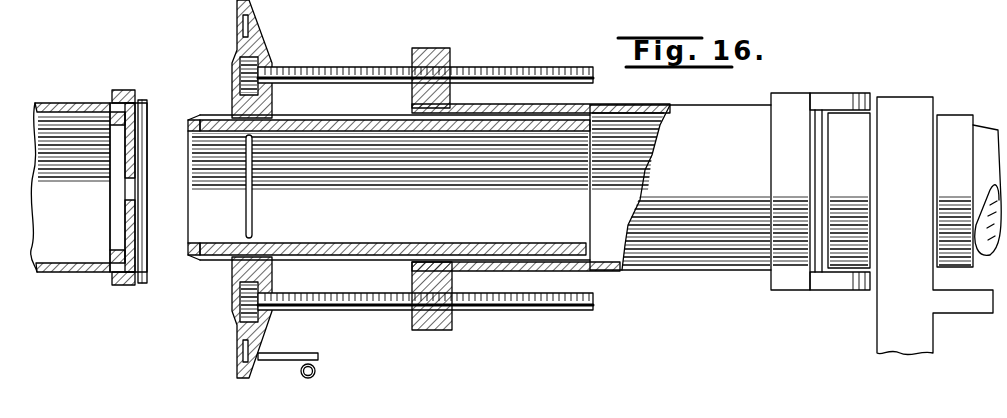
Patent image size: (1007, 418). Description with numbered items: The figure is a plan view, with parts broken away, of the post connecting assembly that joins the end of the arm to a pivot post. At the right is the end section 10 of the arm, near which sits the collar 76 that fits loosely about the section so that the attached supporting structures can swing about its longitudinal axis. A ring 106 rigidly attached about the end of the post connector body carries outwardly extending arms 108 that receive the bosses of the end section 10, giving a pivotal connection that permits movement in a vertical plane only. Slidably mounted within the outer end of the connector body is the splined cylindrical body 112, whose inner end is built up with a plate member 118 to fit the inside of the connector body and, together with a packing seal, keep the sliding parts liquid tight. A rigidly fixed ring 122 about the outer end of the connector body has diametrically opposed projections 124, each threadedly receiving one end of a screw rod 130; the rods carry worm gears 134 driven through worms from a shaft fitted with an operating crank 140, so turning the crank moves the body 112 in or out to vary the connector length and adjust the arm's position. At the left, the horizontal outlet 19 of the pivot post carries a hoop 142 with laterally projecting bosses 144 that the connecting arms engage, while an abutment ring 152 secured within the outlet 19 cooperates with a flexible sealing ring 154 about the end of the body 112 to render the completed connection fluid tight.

The end section 10 is at (984, 126).
The horizontal outlet 19 is at (36, 103).
The collar 76 is at (903, 97).
The ring 106 is at (772, 95).
The outwardly extending arms 108 is at (820, 93).
The splined cylindrical body 112 is at (350, 256).
The plate member 118 is at (612, 272).
The rigidly fixed ring 122 is at (418, 109).
The projections 124 is at (448, 322).
The screw rod 130 is at (325, 69).
The worm gear 134 is at (237, 300).
The operating crank 140 is at (320, 359).
The hoop 142 is at (106, 103).
The bosses 144 is at (116, 100).
The abutment ring 152 is at (146, 127).
The sealing ring 154 is at (206, 110).